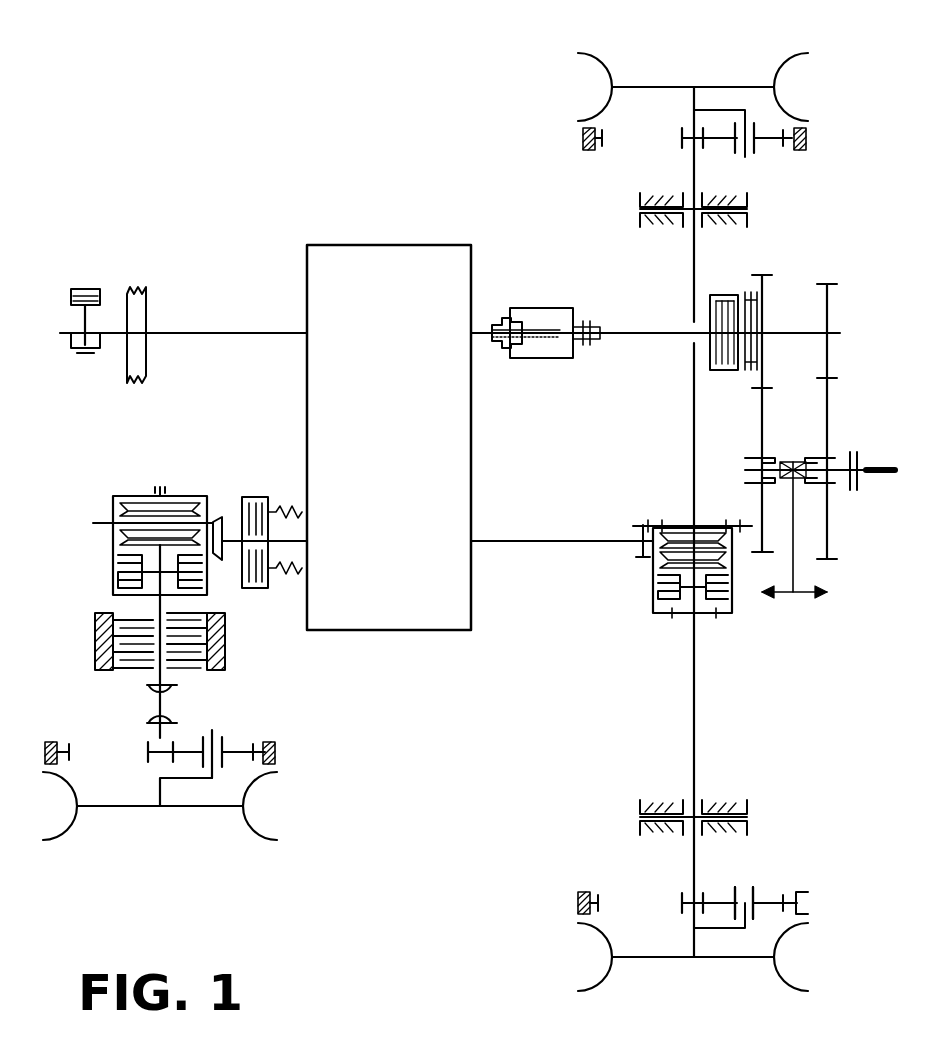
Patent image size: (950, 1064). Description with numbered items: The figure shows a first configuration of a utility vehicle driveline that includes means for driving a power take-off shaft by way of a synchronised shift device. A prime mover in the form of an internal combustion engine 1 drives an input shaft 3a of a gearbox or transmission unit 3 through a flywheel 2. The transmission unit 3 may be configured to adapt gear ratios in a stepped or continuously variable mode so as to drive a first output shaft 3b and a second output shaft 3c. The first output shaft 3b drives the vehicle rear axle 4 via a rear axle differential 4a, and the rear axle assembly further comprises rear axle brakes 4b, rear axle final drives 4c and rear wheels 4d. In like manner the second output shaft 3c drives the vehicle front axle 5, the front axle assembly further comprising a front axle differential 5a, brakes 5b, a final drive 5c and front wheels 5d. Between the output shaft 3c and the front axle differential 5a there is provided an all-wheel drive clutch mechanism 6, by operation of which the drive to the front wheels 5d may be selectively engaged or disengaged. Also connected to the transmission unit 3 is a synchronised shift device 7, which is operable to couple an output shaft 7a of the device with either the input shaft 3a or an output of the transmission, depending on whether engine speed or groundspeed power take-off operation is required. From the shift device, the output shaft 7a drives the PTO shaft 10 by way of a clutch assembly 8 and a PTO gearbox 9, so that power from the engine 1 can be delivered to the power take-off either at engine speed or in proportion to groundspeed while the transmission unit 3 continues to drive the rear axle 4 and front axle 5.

The internal combustion engine 1 is at (83, 289).
The flywheel 2 is at (136, 310).
The transmission unit 3 is at (350, 278).
The input shaft 3a is at (232, 334).
The first output shaft 3b is at (502, 545).
The second output shaft 3c is at (300, 548).
The rear axle 4 is at (696, 684).
The rear axle differential 4a is at (654, 611).
The rear axle brakes 4b is at (650, 800).
The rear axle final drives 4c is at (764, 895).
The rear wheels 4d is at (642, 87).
The front axle 5 is at (142, 602).
The front axle differential 5a is at (138, 496).
The front axle brakes 5b is at (109, 672).
The front axle final drive 5c is at (230, 740).
The front wheels 5d is at (182, 820).
The all-wheel drive clutch mechanism 6 is at (255, 495).
The synchronised shift device 7 is at (528, 308).
The output shaft 7a is at (627, 338).
The clutch assembly 8 is at (724, 372).
The PTO gearbox 9 is at (810, 268).
The PTO shaft 10 is at (880, 474).